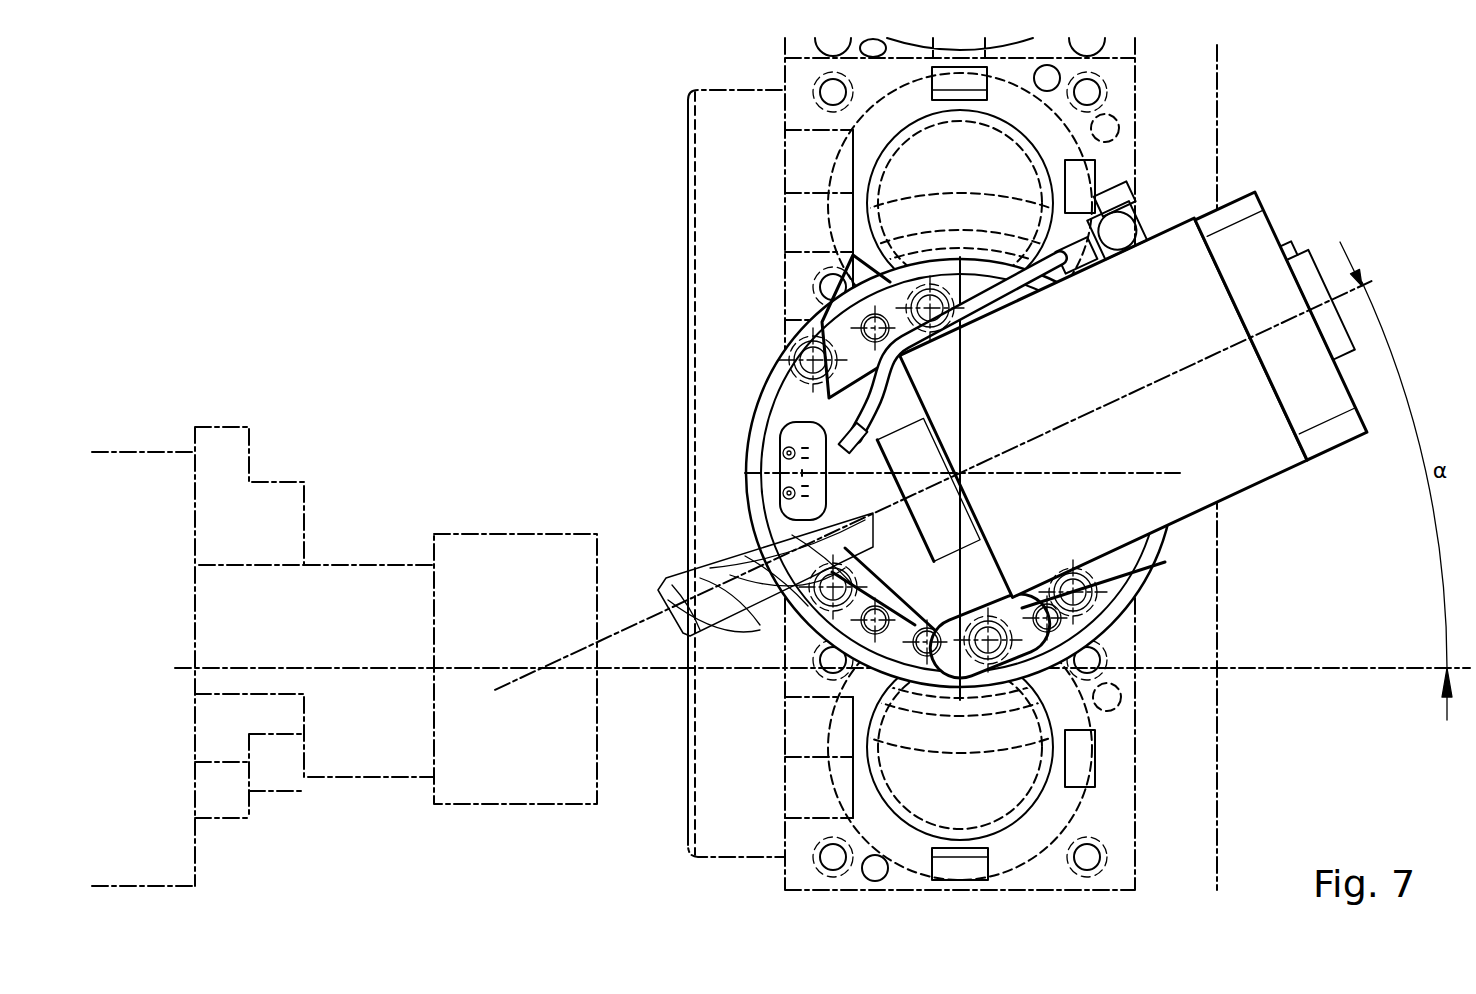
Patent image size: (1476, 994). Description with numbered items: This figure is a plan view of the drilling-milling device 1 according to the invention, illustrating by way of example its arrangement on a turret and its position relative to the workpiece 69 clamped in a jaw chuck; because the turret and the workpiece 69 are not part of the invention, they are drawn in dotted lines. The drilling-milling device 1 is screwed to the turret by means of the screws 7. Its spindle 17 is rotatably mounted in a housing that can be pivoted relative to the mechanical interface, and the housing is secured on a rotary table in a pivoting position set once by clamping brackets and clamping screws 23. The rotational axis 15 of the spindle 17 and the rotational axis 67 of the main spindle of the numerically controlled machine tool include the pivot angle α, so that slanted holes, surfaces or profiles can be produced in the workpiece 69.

The drilling-milling device 1 is at (1320, 162).
The screws 7 is at (803, 355).
The rotational axis of the spindle 15 is at (1173, 380).
The spindle 17 is at (913, 458).
The clamping screws 23 is at (914, 292).
The rotational axis of the main spindle 67 is at (383, 668).
The workpiece 69 is at (523, 773).